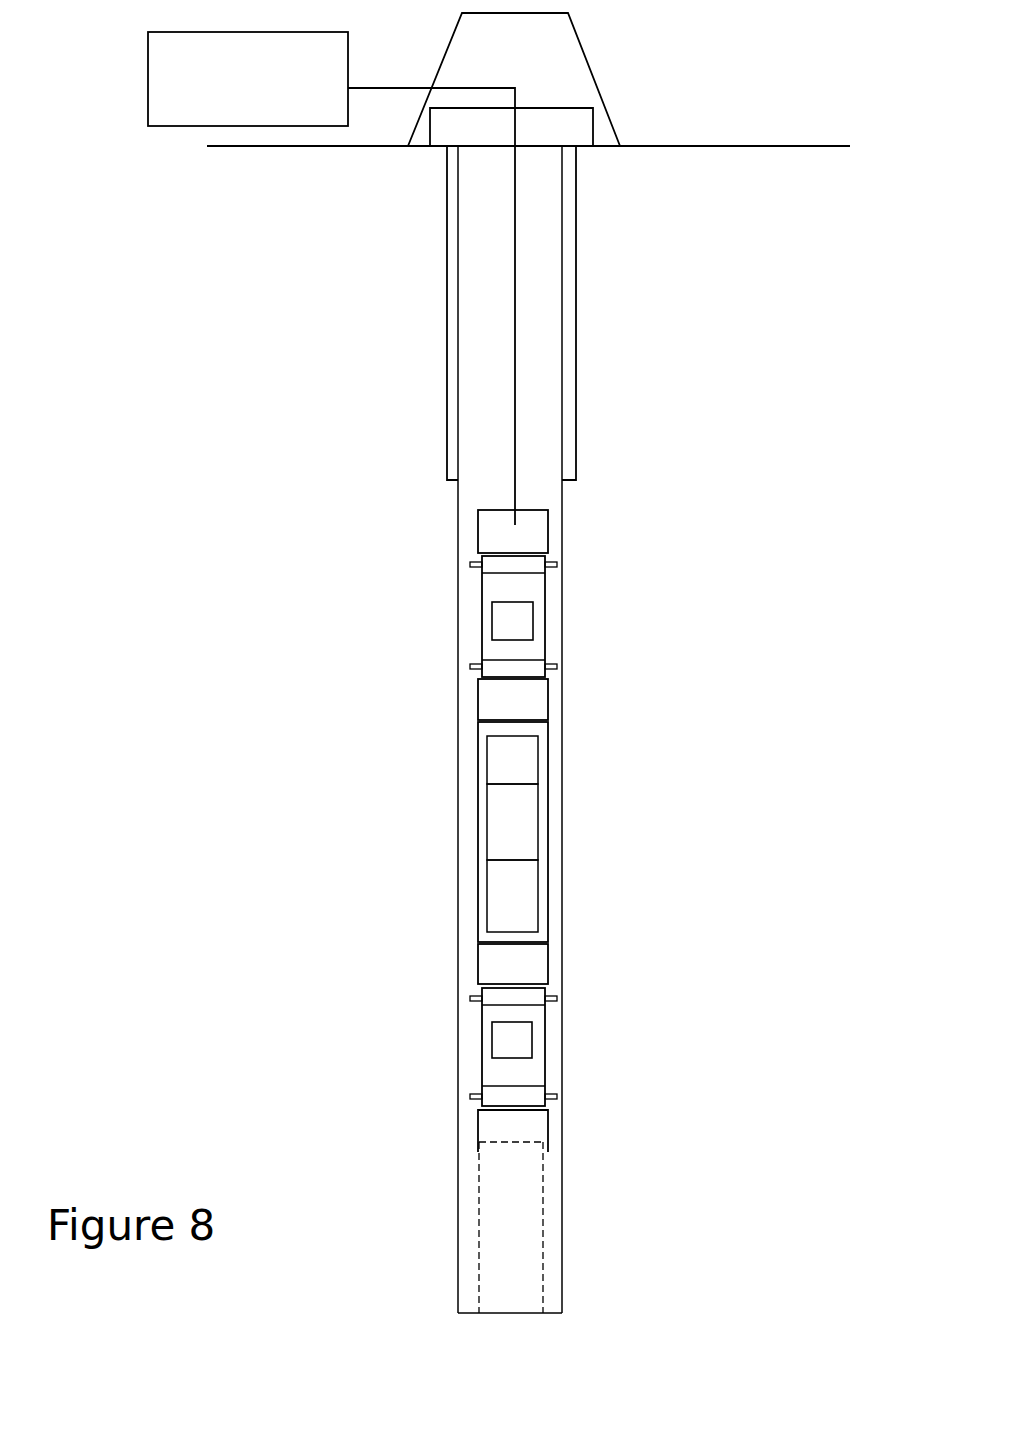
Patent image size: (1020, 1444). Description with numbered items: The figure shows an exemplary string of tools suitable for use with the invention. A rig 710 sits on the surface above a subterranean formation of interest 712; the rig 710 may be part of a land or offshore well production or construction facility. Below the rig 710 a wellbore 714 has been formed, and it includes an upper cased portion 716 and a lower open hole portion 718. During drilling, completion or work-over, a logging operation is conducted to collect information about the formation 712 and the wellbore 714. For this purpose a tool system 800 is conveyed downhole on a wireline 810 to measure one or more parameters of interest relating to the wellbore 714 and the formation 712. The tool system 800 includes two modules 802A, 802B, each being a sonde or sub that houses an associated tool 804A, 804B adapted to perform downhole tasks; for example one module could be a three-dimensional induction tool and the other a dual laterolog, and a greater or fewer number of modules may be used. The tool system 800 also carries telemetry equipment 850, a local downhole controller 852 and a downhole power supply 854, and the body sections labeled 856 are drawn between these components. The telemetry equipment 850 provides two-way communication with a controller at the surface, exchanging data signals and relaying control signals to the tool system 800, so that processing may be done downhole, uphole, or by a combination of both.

The rig 710 is at (617, 88).
The subterranean formation of interest 712 is at (253, 112).
The wellbore 714 is at (458, 770).
The cased portion 716 is at (576, 272).
The open hole portion 718 is at (562, 1113).
The tool system 800 is at (643, 822).
The module 802A is at (552, 618).
The module 802B is at (552, 1062).
The tool 804A is at (499, 627).
The tool 804B is at (500, 1038).
The wireline 810 is at (515, 383).
The telemetry equipment 850 is at (525, 760).
The downhole controller 852 is at (523, 825).
The downhole power supply 854 is at (523, 912).
The spacer sub 856 is at (528, 690).